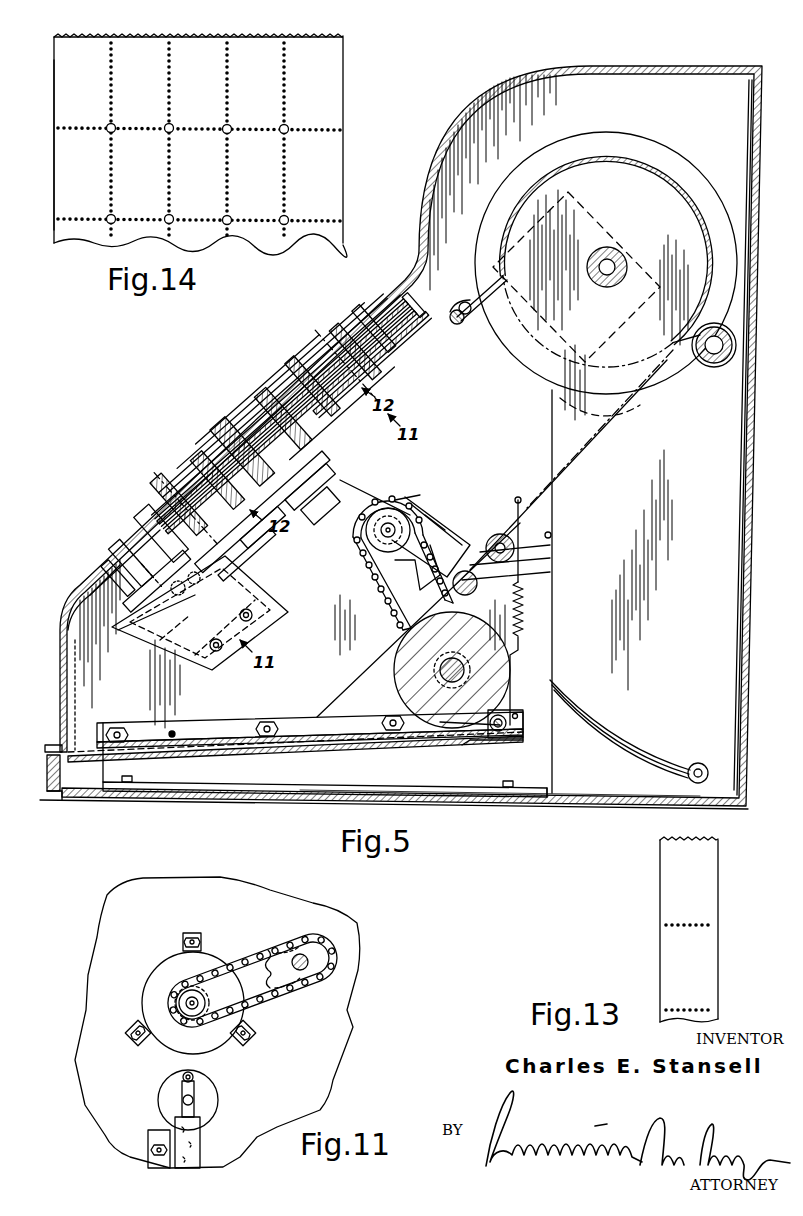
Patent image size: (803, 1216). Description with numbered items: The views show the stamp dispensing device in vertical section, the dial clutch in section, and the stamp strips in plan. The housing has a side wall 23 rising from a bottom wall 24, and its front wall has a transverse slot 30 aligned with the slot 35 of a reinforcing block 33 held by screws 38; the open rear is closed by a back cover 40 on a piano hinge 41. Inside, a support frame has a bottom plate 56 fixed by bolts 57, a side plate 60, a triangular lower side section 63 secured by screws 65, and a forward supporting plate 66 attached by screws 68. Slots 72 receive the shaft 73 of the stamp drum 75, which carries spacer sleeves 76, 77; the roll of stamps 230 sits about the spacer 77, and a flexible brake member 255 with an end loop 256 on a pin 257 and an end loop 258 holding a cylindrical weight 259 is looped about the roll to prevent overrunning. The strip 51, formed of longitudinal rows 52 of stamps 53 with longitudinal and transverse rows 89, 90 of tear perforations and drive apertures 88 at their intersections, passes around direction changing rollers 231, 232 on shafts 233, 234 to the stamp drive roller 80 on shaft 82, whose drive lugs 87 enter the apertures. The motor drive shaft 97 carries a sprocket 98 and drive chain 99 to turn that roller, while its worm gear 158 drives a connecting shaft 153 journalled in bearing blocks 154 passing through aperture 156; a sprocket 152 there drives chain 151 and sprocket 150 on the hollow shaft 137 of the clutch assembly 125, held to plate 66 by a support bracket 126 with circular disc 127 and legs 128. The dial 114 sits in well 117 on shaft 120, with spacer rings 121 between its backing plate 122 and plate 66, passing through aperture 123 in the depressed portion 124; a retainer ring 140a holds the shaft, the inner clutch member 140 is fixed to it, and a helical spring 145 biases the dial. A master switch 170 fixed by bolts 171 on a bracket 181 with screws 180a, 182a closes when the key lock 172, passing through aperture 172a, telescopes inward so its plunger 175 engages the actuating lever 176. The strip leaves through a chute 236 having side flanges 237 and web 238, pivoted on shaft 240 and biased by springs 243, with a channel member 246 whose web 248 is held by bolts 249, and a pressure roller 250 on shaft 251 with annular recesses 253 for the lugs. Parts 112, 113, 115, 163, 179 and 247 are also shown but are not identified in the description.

In FIG. 5, the side wall 23 is at (728, 503).
In FIG. 5, the bottom wall 24 is at (548, 798).
In FIG. 5, the transverse slot 30 is at (90, 740).
In FIG. 5, the reinforcing block 33 is at (46, 768).
In FIG. 5, the transverse slot 35 is at (55, 745).
In FIG. 5, the screws 38 is at (47, 788).
In FIG. 5, the back cover 40 is at (752, 424).
In FIG. 5, the piano hinge 41 is at (753, 452).
In FIG. 14, the strip 51 is at (152, 38).
In FIG. 5, the strip 51 is at (632, 412).
In FIG. 14, the longitudinal rows 52 is at (246, 53).
In FIG. 14, the stamps 53 is at (62, 97).
In FIG. 5, the bottom plate 56 is at (490, 798).
In FIG. 5, the bolts 57 is at (510, 798).
In FIG. 5, the side plate 60 is at (556, 446).
In FIG. 5, the lower side section 63 is at (540, 605).
In FIG. 5, the screws 65 is at (556, 508).
In FIG. 5, the forward supporting plate 66 is at (115, 565).
In FIG. 5, the screws 68 is at (418, 320).
In FIG. 5, the slots 72 is at (580, 200).
In FIG. 5, the shaft 73 is at (607, 260).
In FIG. 5, the stamp reel or drum 75 is at (548, 142).
In FIG. 5, the spacer sleeve 76 is at (628, 262).
In FIG. 5, the spacer sleeve 77 is at (610, 140).
In FIG. 5, the stamp drive roller 80 is at (492, 668).
In FIG. 5, the shaft 82 is at (462, 670).
In FIG. 5, the drive lugs 87 is at (400, 715).
In FIG. 14, the drive apertures 88 is at (169, 219).
In FIG. 14, the longitudinal rows of tear perforations 89 is at (290, 78).
In FIG. 14, the transverse rows of tear perforations 90 is at (318, 128).
In FIG. 5, the drive shaft 97 is at (405, 500).
In FIG. 5, the sprocket 98 is at (410, 585).
In FIG. 5, the drive chain 99 is at (392, 652).
In FIG. 5, the bearing 112 is at (140, 540).
In FIG. 5, the collar 113 is at (190, 485).
In FIG. 5, the dial 114 is at (248, 448).
In FIG. 5, the nut 115 is at (175, 510).
In FIG. 5, the well 117 is at (402, 298).
In FIG. 5, the shaft 120 is at (372, 535).
In FIG. 11, the shaft 120 is at (185, 1003).
In FIG. 5, the spacer rings 121 is at (275, 405).
In FIG. 5, the backing plate 122 is at (318, 370).
In FIG. 5, the aperture 123 is at (290, 390).
In FIG. 5, the inwardly depressed portion 124 is at (402, 340).
In FIG. 5, the clutch assembly 125 is at (236, 468).
In FIG. 5, the support bracket 126 is at (360, 468).
In FIG. 11, the support bracket 126 is at (160, 1046).
In FIG. 5, the circular disc 127 is at (290, 545).
In FIG. 5, the legs 128 is at (370, 420).
In FIG. 5, the hollow shaft 137 is at (268, 422).
In FIG. 5, the retainer ring 140a is at (352, 540).
In FIG. 5, the helical spring 145 is at (300, 375).
In FIG. 5, the connecting shaft 153 is at (500, 532).
In FIG. 11, the connecting shaft 153 is at (310, 962).
In FIG. 5, the bearing blocks 154 is at (385, 484).
In FIG. 5, the aperture 156 is at (428, 515).
In FIG. 5, the worm gear 158 is at (444, 535).
In FIG. 5, the cap 163 is at (412, 282).
In FIG. 5, the master switch 170 is at (205, 664).
In FIG. 5, the bolts 171 is at (248, 560).
In FIG. 5, the key operated lock 172 is at (195, 470).
In FIG. 5, the aperture 172a is at (205, 450).
In FIG. 5, the plunger 175 is at (325, 562).
In FIG. 5, the actuating lever 176 is at (248, 600).
In FIG. 5, the collar 179 is at (180, 500).
In FIG. 5, the screws 180a is at (195, 648).
In FIG. 5, the bracket 181 is at (178, 618).
In FIG. 5, the screws 182a is at (118, 556).
In FIG. 5, the roll 230 is at (640, 405).
In FIG. 5, the direction changing roller 231 is at (550, 547).
In FIG. 5, the direction changing roller 232 is at (550, 560).
In FIG. 5, the shaft 233 is at (552, 538).
In FIG. 5, the shaft 234 is at (550, 574).
In FIG. 5, the chute 236 is at (492, 740).
In FIG. 5, the side flanges 237 is at (470, 740).
In FIG. 5, the web 238 is at (378, 750).
In FIG. 5, the shaft 240 is at (172, 740).
In FIG. 5, the springs 243 is at (530, 628).
In FIG. 5, the channel member 246 is at (333, 750).
In FIG. 5, the rail 247 is at (298, 716).
In FIG. 5, the web 248 is at (310, 748).
In FIG. 5, the bolts 249 is at (265, 723).
In FIG. 5, the pressure roller 250 is at (515, 738).
In FIG. 5, the shaft 251 is at (560, 712).
In FIG. 5, the annular recesses 253 is at (515, 730).
In FIG. 5, the flexible brake member 255 is at (640, 158).
In FIG. 5, the end loop 256 is at (461, 320).
In FIG. 5, the pin 257 is at (462, 303).
In FIG. 5, the end loop 258 is at (712, 365).
In FIG. 5, the cylindrical weight 259 is at (700, 362).
In FIG. 11, the inner clutch member 140 is at (190, 1000).
In FIG. 11, the sprocket 150 is at (250, 962).
In FIG. 11, the chain 151 is at (270, 1003).
In FIG. 11, the sprocket 152 is at (268, 940).